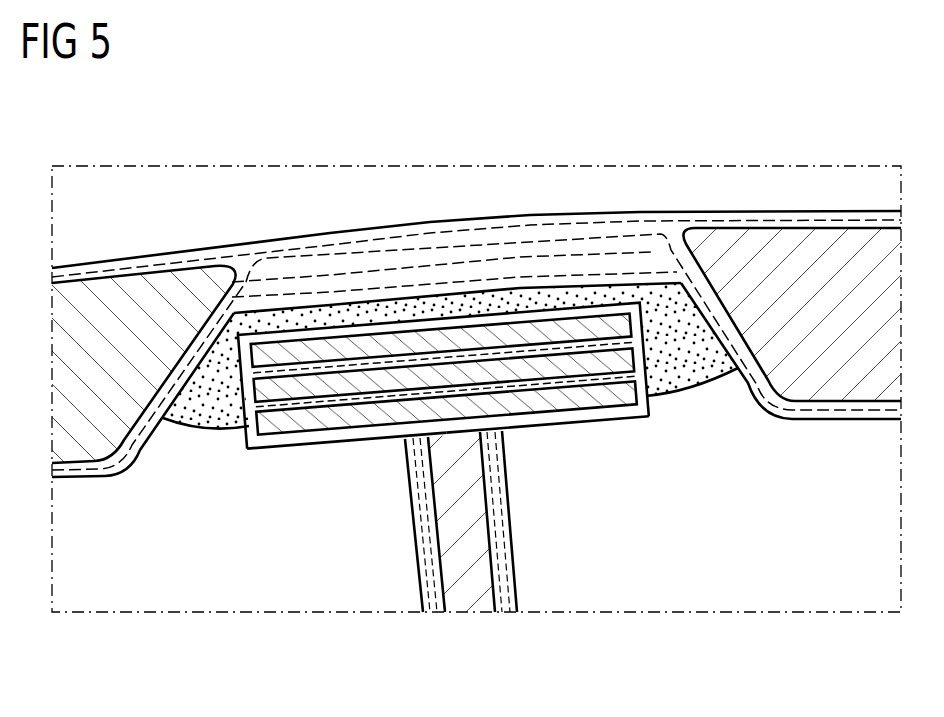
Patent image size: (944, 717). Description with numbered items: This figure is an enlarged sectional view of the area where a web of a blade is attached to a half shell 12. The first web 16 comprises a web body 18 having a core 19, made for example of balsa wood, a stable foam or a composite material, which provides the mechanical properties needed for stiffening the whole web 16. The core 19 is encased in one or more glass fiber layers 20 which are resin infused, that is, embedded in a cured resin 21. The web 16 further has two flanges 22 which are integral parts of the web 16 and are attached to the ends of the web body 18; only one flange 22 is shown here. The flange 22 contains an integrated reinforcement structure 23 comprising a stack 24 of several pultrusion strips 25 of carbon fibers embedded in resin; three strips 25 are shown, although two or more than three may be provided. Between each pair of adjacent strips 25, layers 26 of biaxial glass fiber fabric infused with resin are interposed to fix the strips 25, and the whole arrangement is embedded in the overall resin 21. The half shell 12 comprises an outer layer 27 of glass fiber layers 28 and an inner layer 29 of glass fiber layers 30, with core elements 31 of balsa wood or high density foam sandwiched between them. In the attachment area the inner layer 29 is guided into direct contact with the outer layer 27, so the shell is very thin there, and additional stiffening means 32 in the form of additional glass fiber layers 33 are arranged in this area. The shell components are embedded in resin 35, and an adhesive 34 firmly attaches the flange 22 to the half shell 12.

The half shell 12 is at (705, 130).
The first web 16 is at (410, 570).
The web body 18 is at (476, 566).
The core 19 is at (470, 602).
The glass fiber layers 20 is at (423, 587).
The resin 21 is at (513, 567).
The flange 22 is at (562, 438).
The reinforcement structure 23 is at (367, 455).
The stack 24 is at (545, 316).
The pultrusion strips 25 is at (600, 368).
The layers of biaxial glass fiber fabric 26 is at (320, 368).
The outer layer 27 is at (297, 234).
The glass fiber layers 28 is at (220, 252).
The inner layer 29 is at (108, 476).
The glass fiber layers 30 is at (395, 247).
The core elements 31 is at (133, 282).
The stiffening means 32 is at (500, 268).
The glass fiber layers 33 is at (452, 261).
The adhesive 34 is at (222, 428).
The resin 35 is at (353, 240).